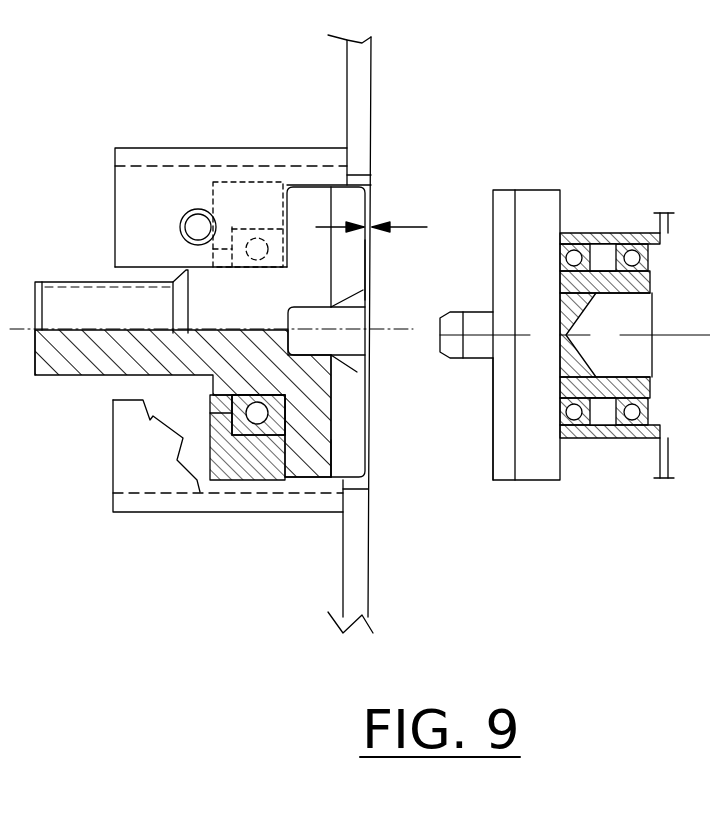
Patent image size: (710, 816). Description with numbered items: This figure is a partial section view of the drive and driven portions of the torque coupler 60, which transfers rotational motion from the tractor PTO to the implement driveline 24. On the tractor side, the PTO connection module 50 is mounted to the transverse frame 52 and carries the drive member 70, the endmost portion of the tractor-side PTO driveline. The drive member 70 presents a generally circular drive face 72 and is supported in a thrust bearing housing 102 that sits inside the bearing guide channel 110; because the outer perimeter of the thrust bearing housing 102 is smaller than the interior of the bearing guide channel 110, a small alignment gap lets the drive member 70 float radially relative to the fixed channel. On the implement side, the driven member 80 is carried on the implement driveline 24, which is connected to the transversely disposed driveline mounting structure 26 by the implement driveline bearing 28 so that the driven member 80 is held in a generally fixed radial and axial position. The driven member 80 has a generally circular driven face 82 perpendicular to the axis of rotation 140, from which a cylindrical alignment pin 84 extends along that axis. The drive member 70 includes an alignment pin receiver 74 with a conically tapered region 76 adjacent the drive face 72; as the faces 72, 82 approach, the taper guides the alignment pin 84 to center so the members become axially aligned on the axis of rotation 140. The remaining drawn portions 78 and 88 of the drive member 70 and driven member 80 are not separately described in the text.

The PTO connection module 50 is at (273, 66).
The transverse frame 52 is at (365, 83).
The torque coupler 60 is at (470, 158).
The drive member 70 is at (313, 203).
The drive face 72 is at (367, 270).
The alignment pin receiver 74 is at (315, 312).
The conically tapered region 76 is at (347, 362).
The housing base 78 is at (350, 457).
The driven member 80 is at (526, 192).
The driven face 82 is at (513, 415).
The alignment pin 84 is at (488, 292).
The bracket leg 88 is at (500, 470).
The driveline mounting structure 26 is at (585, 220).
The implement driveline bearing 28 is at (648, 252).
The implement driveline 24 is at (643, 392).
The axis of rotation 140 is at (672, 336).
The bearing guide channel 110 is at (188, 148).
The thrust bearing housing 102 is at (252, 198).